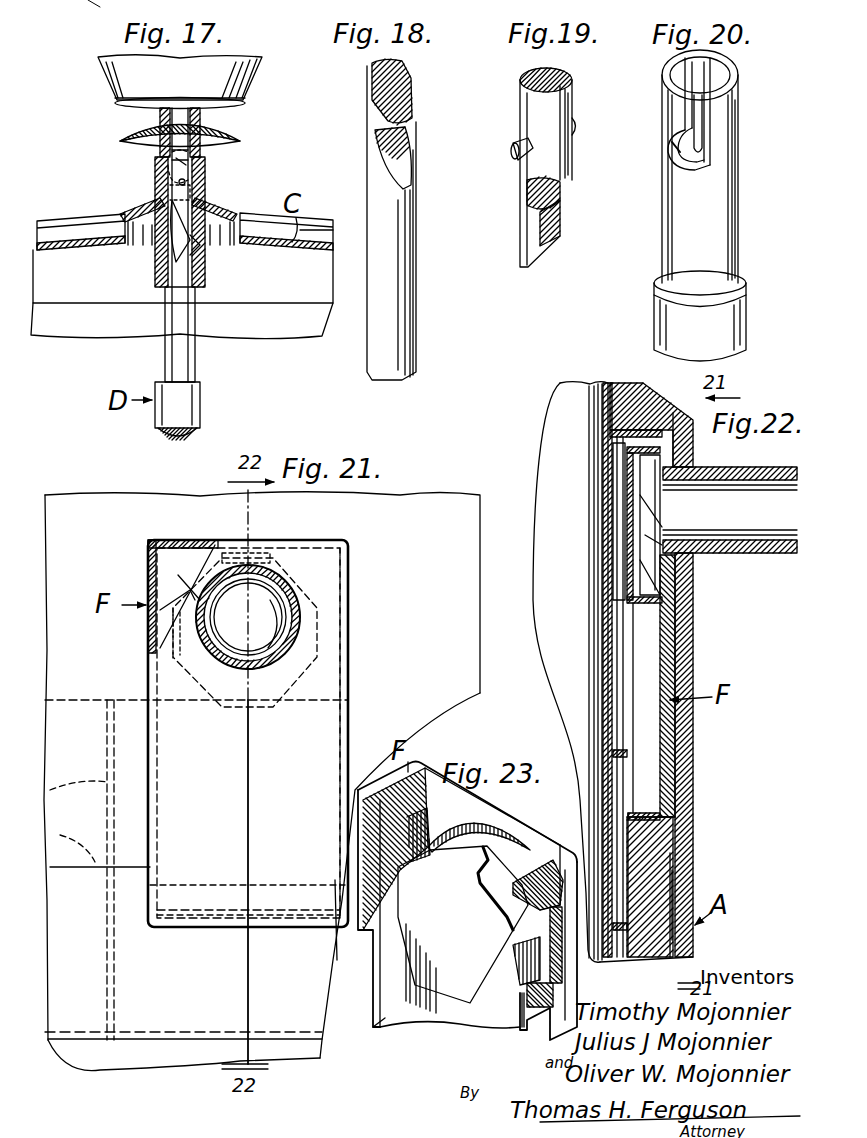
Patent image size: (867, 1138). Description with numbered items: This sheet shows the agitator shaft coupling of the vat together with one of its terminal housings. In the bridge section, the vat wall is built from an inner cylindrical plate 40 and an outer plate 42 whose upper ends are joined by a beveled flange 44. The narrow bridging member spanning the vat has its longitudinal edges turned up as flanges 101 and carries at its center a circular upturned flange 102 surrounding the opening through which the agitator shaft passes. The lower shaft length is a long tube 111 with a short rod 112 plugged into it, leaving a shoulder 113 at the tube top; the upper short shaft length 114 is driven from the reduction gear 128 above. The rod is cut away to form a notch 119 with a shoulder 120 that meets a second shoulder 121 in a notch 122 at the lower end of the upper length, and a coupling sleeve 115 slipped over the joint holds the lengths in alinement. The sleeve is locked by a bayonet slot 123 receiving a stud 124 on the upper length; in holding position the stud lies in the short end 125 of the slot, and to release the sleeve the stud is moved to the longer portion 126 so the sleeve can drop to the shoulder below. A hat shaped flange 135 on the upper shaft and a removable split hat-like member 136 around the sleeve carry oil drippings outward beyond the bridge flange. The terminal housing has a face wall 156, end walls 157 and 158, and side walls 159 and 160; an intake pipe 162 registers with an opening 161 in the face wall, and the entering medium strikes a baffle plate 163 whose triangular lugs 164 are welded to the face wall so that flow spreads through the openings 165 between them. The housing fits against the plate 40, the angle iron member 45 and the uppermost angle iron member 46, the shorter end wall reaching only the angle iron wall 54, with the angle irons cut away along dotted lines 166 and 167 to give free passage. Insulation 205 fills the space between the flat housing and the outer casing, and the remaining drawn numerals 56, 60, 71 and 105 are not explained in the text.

In FIG. 17, the inner cylindrical plate 40 is at (320, 328).
In FIG. 21, the inner cylindrical plate 40 is at (72, 508).
In FIG. 22, the inner cylindrical plate 40 is at (600, 384).
In FIG. 22, the outer plate 42 is at (690, 836).
In FIG. 22, the beveled flange 44 is at (638, 384).
In FIG. 21, the angle iron member 45 is at (52, 752).
In FIG. 22, the angle iron member 45 is at (628, 673).
In FIG. 21, the angle iron members 46 is at (63, 886).
In FIG. 22, the angle iron members 46 is at (680, 825).
In FIG. 21, the angle iron wall 54 is at (75, 933).
In FIG. 22, the angle iron wall 54 is at (640, 862).
In FIG. 21, the passage 56 is at (60, 837).
In FIG. 21, the bottom wall 60 is at (86, 1040).
In FIG. 21, the opening 71 is at (66, 784).
In FIG. 17, the flanges 101 is at (322, 244).
In FIG. 17, the circular upturned flange 102 is at (143, 244).
In FIG. 17, the cover 105 is at (342, 204).
In FIG. 17, the long tube 111 is at (166, 431).
In FIG. 17, the short rod 112 is at (165, 350).
In FIG. 18, the short rod 112 is at (416, 358).
In FIG. 17, the shoulder 113 is at (200, 385).
In FIG. 17, the upper short shaft length 114 is at (202, 153).
In FIG. 19, the upper short shaft length 114 is at (565, 73).
In FIG. 17, the coupling sleeve 115 is at (205, 280).
In FIG. 20, the coupling sleeve 115 is at (735, 262).
In FIG. 17, the notch 119 is at (175, 263).
In FIG. 18, the notch 119 is at (405, 140).
In FIG. 17, the shoulder 120 is at (176, 196).
In FIG. 18, the shoulder 120 is at (376, 123).
In FIG. 17, the second shoulder 121 is at (202, 246).
In FIG. 19, the second shoulder 121 is at (560, 216).
In FIG. 17, the notch 122 is at (232, 202).
In FIG. 19, the notch 122 is at (562, 190).
In FIG. 17, the bayonet slot 123 is at (182, 163).
In FIG. 20, the bayonet slot 123 is at (712, 156).
In FIG. 17, the stud 124 is at (186, 182).
In FIG. 19, the stud 124 is at (516, 162).
In FIG. 17, the end of bayonet slot 125 is at (166, 176).
In FIG. 20, the end of bayonet slot 125 is at (670, 147).
In FIG. 17, the longer portion of slot 126 is at (165, 152).
In FIG. 20, the longer portion of slot 126 is at (708, 117).
In FIG. 17, the reduction gear 128 is at (258, 77).
In FIG. 17, the hat shaped flange 135 is at (240, 135).
In FIG. 17, the second hat-like member 136 is at (122, 209).
In FIG. 21, the face wall 156 is at (337, 690).
In FIG. 22, the face wall 156 is at (668, 675).
In FIG. 23, the face wall 156 is at (458, 1022).
In FIG. 21, the end wall 157 is at (300, 548).
In FIG. 22, the end wall 157 is at (612, 433).
In FIG. 23, the end wall 157 is at (492, 820).
In FIG. 21, the end wall 158 is at (225, 930).
In FIG. 22, the end wall 158 is at (640, 835).
In FIG. 21, the side wall 159 is at (345, 640).
In FIG. 22, the side wall 159 is at (660, 648).
In FIG. 23, the side wall 159 is at (392, 1030).
In FIG. 21, the side wall 160 is at (152, 650).
In FIG. 23, the side wall 160 is at (548, 1035).
In FIG. 21, the opening 161 is at (268, 660).
In FIG. 22, the opening 161 is at (664, 500).
In FIG. 23, the opening 161 is at (513, 882).
In FIG. 21, the intake pipe 162 is at (222, 660).
In FIG. 22, the intake pipe 162 is at (780, 460).
In FIG. 21, the baffle plate 163 is at (185, 595).
In FIG. 22, the baffle plate 163 is at (627, 487).
In FIG. 23, the baffle plate 163 is at (465, 893).
In FIG. 21, the lugs 164 is at (232, 540).
In FIG. 22, the lugs 164 is at (628, 449).
In FIG. 23, the lugs 164 is at (483, 847).
In FIG. 21, the openings 165 is at (185, 590).
In FIG. 22, the openings 165 is at (640, 495).
In FIG. 23, the openings 165 is at (517, 923).
In FIG. 21, the dotted lines 166 is at (162, 826).
In FIG. 22, the dotted lines 166 is at (632, 640).
In FIG. 21, the dotted lines 167 is at (205, 914).
In FIG. 22, the dotted lines 167 is at (632, 815).
In FIG. 22, the insulation 205 is at (675, 876).